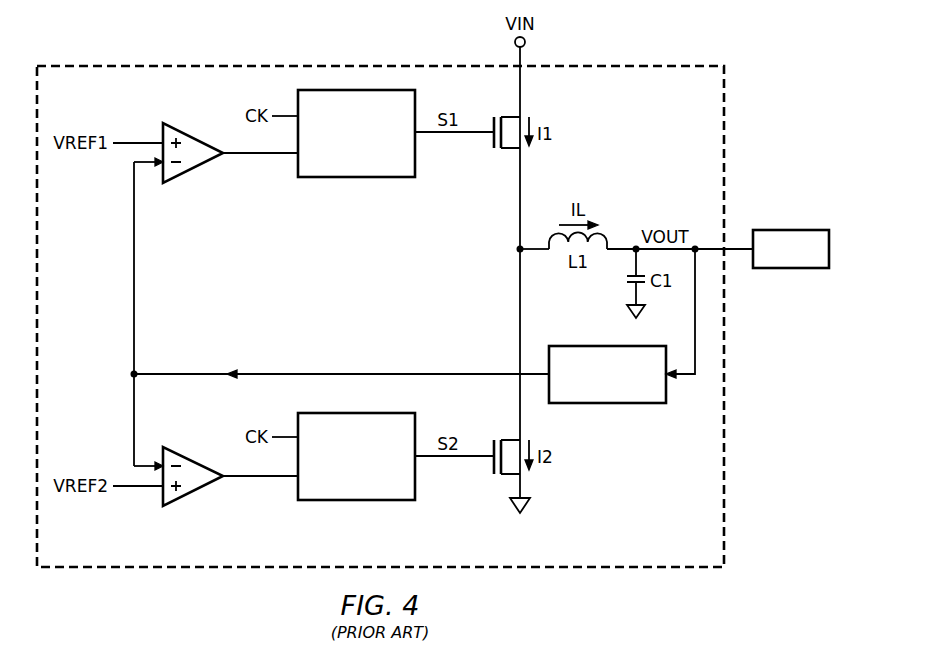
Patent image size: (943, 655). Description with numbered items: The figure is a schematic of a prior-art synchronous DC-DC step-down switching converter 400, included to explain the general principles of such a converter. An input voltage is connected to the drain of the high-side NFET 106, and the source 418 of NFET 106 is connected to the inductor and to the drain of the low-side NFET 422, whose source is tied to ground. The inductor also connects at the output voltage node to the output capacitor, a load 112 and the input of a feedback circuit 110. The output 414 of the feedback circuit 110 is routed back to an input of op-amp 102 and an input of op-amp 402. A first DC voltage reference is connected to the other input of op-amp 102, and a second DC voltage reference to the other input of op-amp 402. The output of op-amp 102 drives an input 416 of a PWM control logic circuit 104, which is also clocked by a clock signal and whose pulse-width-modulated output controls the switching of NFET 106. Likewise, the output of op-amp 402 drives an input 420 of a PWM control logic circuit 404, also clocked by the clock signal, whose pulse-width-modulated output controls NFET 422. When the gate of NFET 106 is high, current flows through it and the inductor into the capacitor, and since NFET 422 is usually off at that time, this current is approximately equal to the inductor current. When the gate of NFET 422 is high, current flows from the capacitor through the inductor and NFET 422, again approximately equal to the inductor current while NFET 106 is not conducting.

The synchronous DC-DC step-down switching converter 400 is at (222, 61).
The op-amp 102 is at (193, 170).
The PWM control logic circuit 104 is at (355, 178).
The NFET 106 is at (493, 142).
The feedback circuit 110 is at (605, 404).
The load 112 is at (790, 229).
The op-amp 402 is at (193, 494).
The PWM control logic circuit 404 is at (355, 501).
The output of the feedback circuit 414 is at (347, 372).
The input of PWM control logic circuit 416 is at (273, 154).
The source of NFET 418 is at (518, 247).
The input of PWM control logic circuit 420 is at (273, 477).
The NFET 422 is at (493, 468).